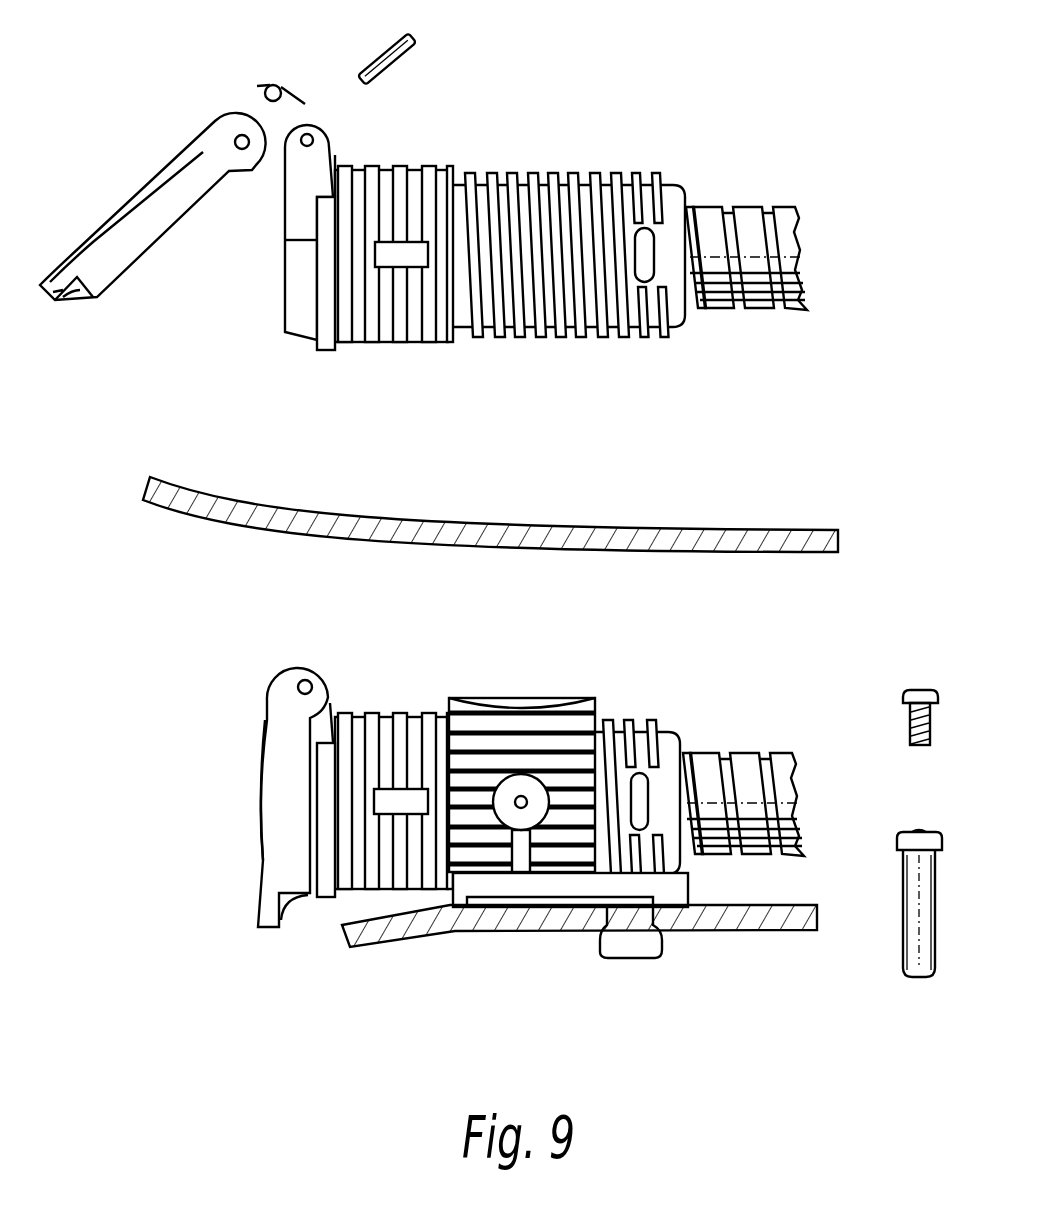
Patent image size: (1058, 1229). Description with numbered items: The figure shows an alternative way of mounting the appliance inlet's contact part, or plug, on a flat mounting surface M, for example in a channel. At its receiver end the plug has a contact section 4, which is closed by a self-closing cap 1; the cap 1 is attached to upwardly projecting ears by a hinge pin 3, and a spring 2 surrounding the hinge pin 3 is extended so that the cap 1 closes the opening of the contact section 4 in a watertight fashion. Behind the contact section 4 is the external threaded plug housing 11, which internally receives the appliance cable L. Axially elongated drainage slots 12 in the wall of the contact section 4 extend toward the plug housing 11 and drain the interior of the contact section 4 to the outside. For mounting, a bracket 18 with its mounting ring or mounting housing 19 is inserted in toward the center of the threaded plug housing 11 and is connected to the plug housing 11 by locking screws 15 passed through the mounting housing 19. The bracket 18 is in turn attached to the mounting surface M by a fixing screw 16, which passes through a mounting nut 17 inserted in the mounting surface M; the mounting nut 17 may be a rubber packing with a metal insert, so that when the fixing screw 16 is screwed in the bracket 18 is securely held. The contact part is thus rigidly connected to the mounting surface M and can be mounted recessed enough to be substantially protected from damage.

The self-closing cap 1 is at (205, 148).
The spring 2 is at (273, 83).
The hinge pin 3 is at (380, 46).
The contact section 4 is at (362, 342).
The plug housing 11 is at (625, 720).
The drainage slots 12 is at (383, 798).
The locking screws 15 is at (910, 727).
The fixing screw 16 is at (915, 943).
The mounting nut 17 is at (643, 947).
The bracket 18 is at (550, 887).
The mounting housing 19 is at (508, 698).
The appliance cable L is at (747, 763).
The mounting surface M is at (383, 932).